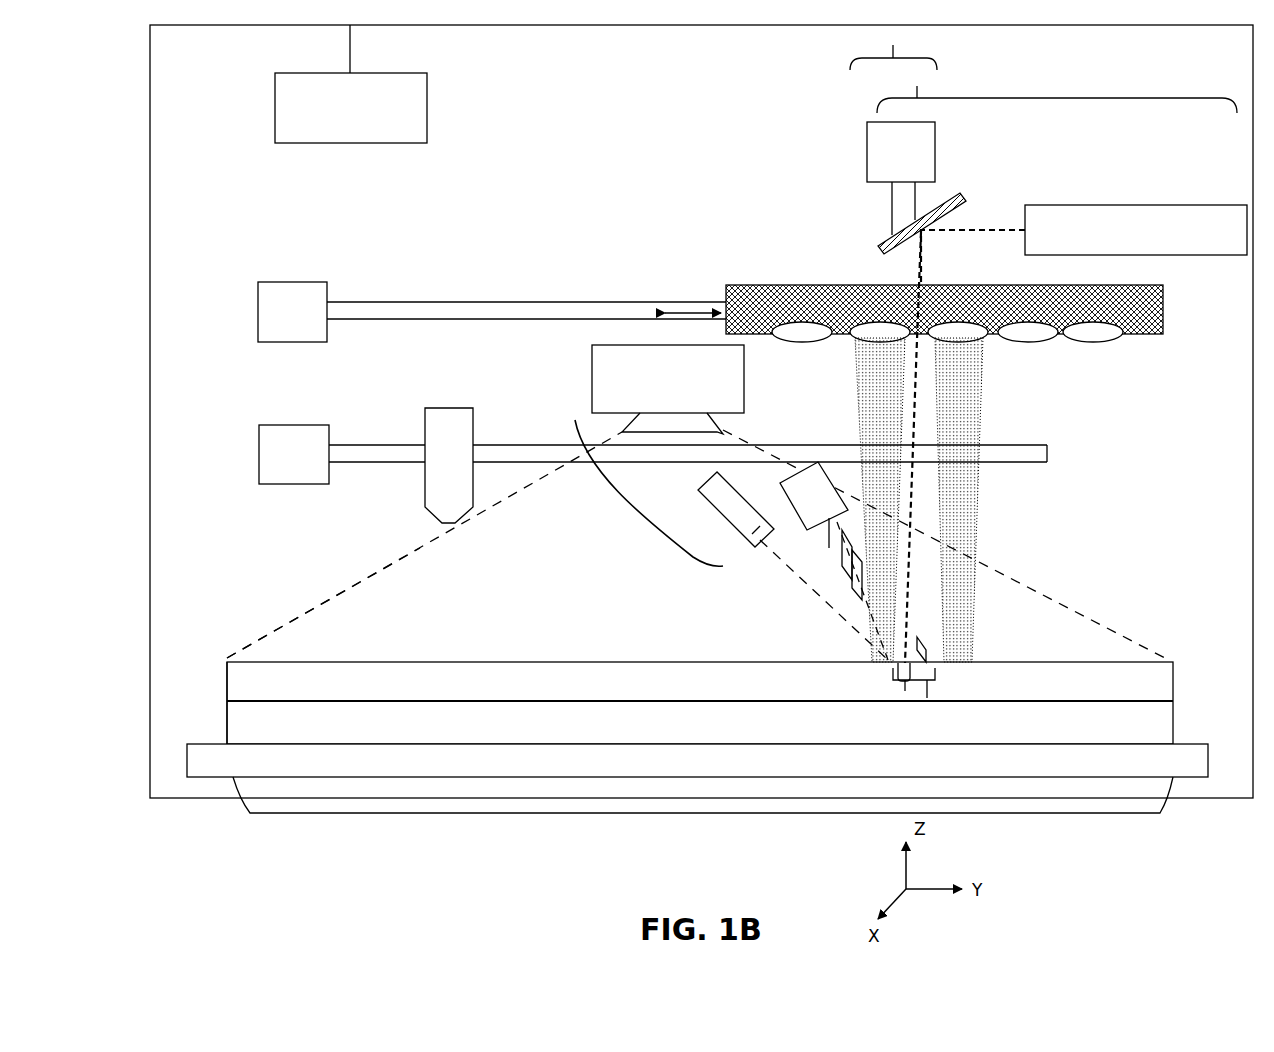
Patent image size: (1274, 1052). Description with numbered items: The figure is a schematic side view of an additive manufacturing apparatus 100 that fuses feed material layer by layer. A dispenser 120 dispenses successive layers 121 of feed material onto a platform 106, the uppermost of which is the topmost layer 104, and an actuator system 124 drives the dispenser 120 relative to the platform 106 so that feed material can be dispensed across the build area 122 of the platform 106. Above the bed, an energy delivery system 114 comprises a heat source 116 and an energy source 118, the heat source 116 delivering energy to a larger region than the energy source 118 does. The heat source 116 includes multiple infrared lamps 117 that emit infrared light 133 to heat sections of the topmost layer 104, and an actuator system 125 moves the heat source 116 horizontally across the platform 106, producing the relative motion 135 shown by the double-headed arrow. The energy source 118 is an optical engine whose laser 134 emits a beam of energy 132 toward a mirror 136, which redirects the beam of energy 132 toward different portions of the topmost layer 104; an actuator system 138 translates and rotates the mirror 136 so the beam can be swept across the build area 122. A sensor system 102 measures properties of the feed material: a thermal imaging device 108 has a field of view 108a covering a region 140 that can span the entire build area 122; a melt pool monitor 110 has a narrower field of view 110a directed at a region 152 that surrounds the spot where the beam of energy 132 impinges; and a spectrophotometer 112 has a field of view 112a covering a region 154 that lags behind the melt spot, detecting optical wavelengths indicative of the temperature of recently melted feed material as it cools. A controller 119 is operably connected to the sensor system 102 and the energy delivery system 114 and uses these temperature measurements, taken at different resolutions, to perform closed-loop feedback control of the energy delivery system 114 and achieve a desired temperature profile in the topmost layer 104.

The additive manufacturing apparatus 100 is at (200, 800).
The sensor system 102 is at (641, 502).
The topmost layer 104 is at (240, 678).
The platform 106 is at (697, 760).
The thermal imaging device 108 is at (668, 389).
The field of view 108a is at (327, 601).
The melt pool monitor 110 is at (752, 535).
The field of view 110a is at (840, 606).
The spectrophotometer 112 is at (814, 496).
The field of view 112a is at (853, 587).
The energy delivery system 114 is at (893, 46).
The heat source 116 is at (818, 287).
The infrared lamps 117 is at (1037, 343).
The energy source 118 is at (1057, 88).
The controller 119 is at (351, 84).
The dispenser 120 is at (449, 465).
The successive layers 121 is at (218, 717).
The build area 122 is at (733, 815).
The actuator system 124 is at (653, 454).
The actuator system 125 is at (492, 312).
The beam of energy 132 is at (915, 373).
The infrared light 133 is at (965, 483).
The laser 134 is at (1178, 204).
The relative motion 135 is at (702, 311).
The mirror 136 is at (963, 195).
The actuator system 138 is at (935, 163).
The region 140 is at (283, 626).
The region 152 is at (905, 480).
The region 154 is at (936, 682).